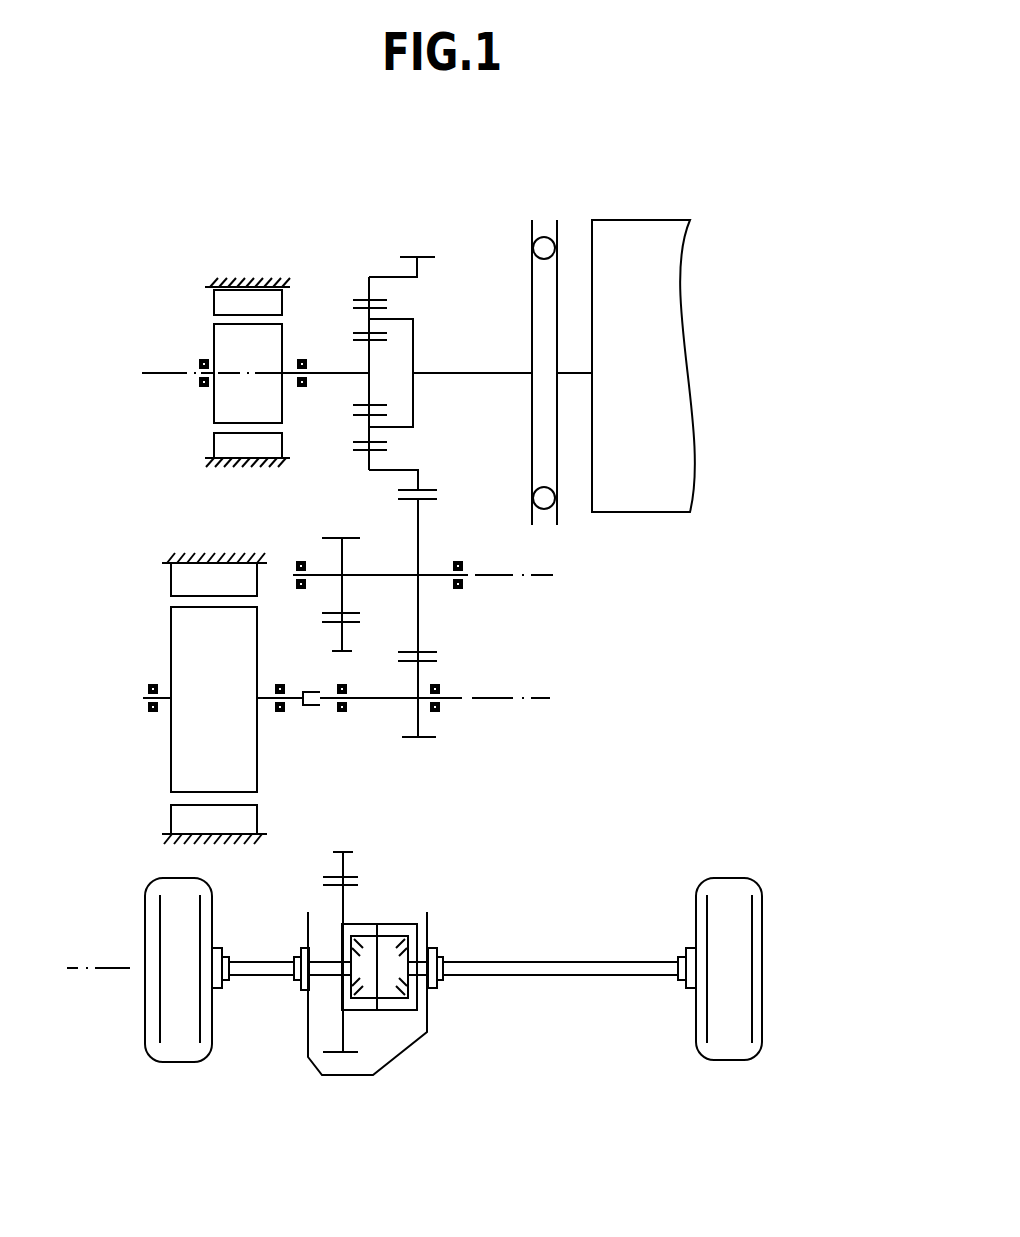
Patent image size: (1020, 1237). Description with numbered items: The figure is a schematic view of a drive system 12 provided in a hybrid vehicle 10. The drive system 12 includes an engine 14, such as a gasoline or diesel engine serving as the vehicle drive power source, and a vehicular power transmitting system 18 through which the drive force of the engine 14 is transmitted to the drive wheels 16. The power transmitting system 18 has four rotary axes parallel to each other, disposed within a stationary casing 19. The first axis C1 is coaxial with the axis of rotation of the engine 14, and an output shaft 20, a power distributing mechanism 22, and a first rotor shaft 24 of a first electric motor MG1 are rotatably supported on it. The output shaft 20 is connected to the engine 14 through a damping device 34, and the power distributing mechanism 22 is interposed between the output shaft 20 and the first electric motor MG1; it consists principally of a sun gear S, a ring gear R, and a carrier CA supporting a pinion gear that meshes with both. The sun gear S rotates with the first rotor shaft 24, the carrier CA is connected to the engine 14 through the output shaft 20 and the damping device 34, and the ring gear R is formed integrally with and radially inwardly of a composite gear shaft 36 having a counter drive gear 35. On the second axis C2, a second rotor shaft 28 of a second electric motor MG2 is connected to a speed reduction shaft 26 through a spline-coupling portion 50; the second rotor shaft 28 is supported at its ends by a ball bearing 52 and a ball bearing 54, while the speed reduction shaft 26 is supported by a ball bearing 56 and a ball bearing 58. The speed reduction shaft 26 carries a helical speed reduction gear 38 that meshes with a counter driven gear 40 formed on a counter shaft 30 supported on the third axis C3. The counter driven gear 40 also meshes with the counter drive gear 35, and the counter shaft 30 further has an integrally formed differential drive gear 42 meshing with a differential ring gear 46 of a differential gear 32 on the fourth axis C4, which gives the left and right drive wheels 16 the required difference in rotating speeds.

The hybrid vehicle 10 is at (323, 152).
The drive system 12 is at (746, 190).
The engine 14 is at (650, 224).
The drive wheels 16 is at (172, 887).
The vehicular power transmitting system 18 is at (250, 500).
The casing 19 is at (232, 280).
The output shaft 20 is at (446, 372).
The power distributing mechanism 22 is at (380, 334).
The first rotor shaft 24 is at (290, 385).
The speed reduction shaft 26 is at (442, 708).
The second rotor shaft 28 is at (262, 712).
The counter shaft 30 is at (432, 578).
The differential gear 32 is at (398, 1030).
The damping device 34 is at (549, 196).
The counter drive gear 35 is at (425, 490).
The composite gear shaft 36 is at (378, 476).
The speed reduction gear 38 is at (402, 740).
The counter driven gear 40 is at (432, 503).
The differential drive gear 42 is at (330, 612).
The differential ring gear 46 is at (332, 628).
The spline-coupling portion 50 is at (313, 718).
The ball bearing 52 is at (150, 715).
The ball bearing 54 is at (280, 688).
The ball bearing 56 is at (343, 690).
The ball bearing 58 is at (438, 687).
The ring gear R is at (358, 297).
The sun gear S is at (360, 343).
The carrier CA is at (392, 319).
The first electric motor MG1 is at (186, 336).
The second electric motor MG2 is at (150, 637).
The first axis C1 is at (168, 373).
The second axis C2 is at (540, 700).
The third axis C3 is at (545, 577).
The fourth axis C4 is at (78, 968).